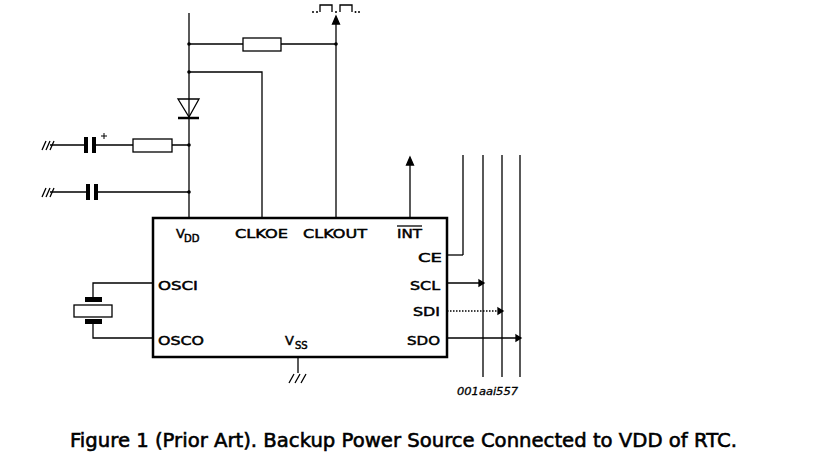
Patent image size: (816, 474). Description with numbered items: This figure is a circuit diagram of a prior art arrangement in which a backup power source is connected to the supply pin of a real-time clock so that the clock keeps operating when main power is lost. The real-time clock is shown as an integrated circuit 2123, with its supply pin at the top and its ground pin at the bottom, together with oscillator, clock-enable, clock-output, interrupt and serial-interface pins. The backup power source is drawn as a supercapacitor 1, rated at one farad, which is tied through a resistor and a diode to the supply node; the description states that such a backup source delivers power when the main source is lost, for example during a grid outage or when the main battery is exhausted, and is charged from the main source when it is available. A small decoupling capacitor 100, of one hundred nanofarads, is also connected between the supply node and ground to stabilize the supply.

The PCF2123 real-time clock IC 2123 is at (300, 287).
The 1 F supercapacitor backup power source 1 is at (115, 125).
The 100 nF decoupling capacitor 100 is at (115, 184).